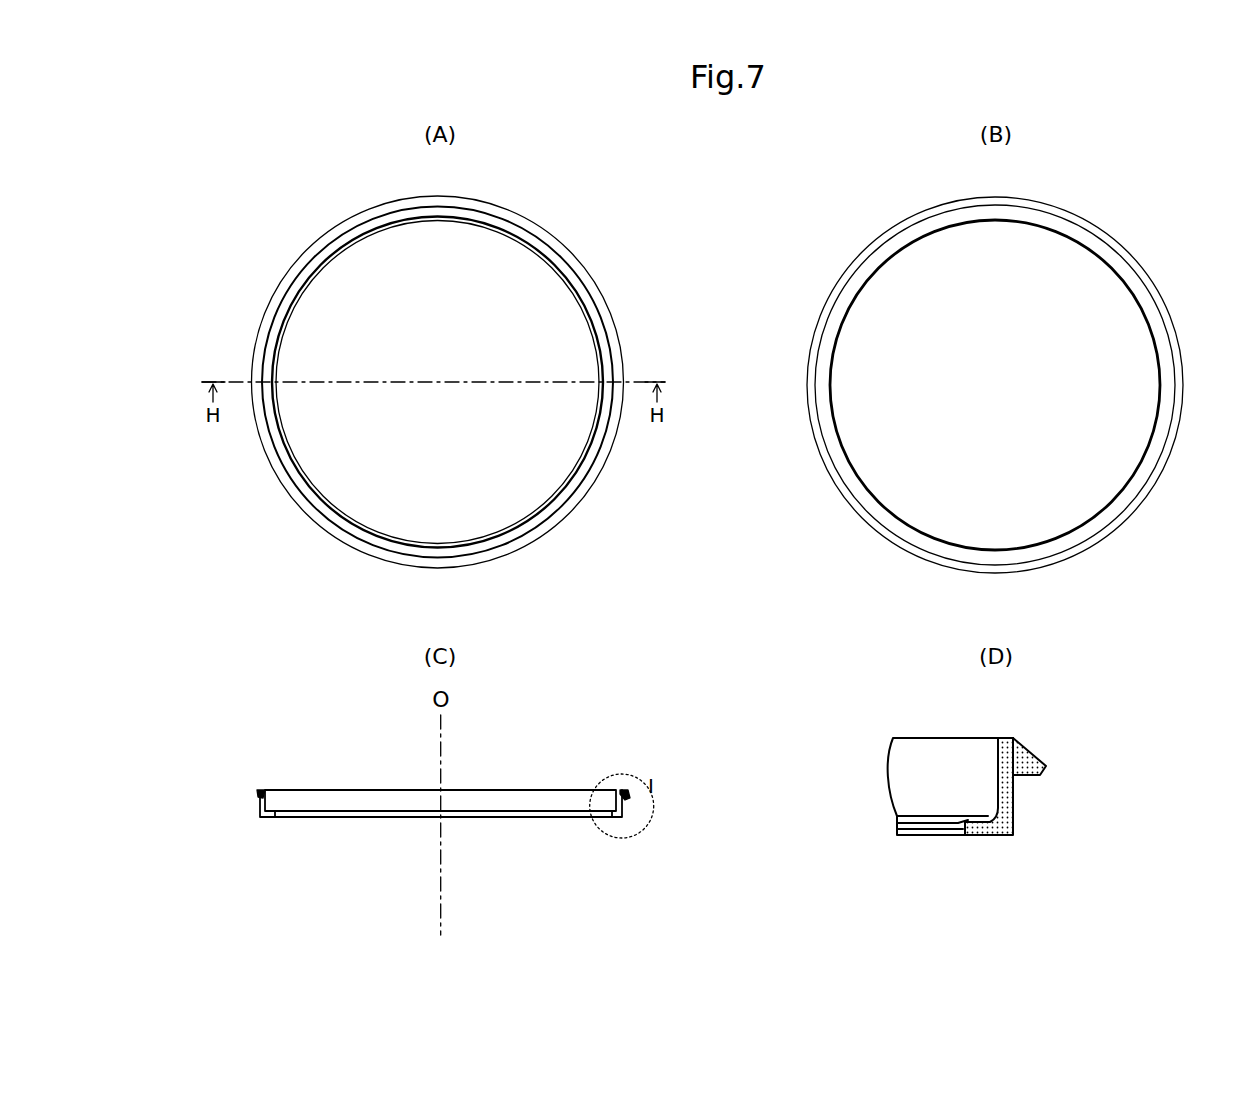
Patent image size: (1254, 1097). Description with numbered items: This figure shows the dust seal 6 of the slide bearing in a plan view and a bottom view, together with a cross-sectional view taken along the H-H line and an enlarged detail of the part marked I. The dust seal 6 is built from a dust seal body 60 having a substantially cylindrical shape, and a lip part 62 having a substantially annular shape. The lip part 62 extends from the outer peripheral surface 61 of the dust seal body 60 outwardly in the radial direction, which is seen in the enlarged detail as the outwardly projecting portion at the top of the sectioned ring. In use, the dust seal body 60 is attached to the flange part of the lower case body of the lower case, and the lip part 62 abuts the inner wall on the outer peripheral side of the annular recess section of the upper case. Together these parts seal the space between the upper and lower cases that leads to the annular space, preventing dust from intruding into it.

The dust seal 6 is at (631, 171).
The dust seal body 60 is at (578, 283).
The outer peripheral surface of the dust seal body 61 is at (1130, 252).
The lip part 62 is at (610, 312).